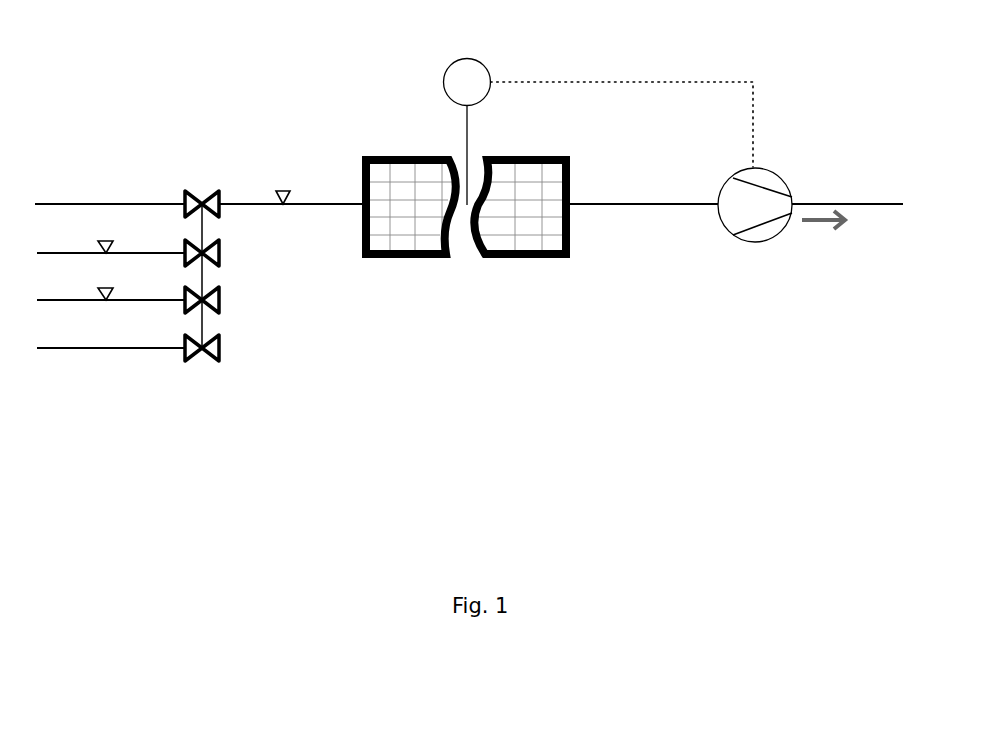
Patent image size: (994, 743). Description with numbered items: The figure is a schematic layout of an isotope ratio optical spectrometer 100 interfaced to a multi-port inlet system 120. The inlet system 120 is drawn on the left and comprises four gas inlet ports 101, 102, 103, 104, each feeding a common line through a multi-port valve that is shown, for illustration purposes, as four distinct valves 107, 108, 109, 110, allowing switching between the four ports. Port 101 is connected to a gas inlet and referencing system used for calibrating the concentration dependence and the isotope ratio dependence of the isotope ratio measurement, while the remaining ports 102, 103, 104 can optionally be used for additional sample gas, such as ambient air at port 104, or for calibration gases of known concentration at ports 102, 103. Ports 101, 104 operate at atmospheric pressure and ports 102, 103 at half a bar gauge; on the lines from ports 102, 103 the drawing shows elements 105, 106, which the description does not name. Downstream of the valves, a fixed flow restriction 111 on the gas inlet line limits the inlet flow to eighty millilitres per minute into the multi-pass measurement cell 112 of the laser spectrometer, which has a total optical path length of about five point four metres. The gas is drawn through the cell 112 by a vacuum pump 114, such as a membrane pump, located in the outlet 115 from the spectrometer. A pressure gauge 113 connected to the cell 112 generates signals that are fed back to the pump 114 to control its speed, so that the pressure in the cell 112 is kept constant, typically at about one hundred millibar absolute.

The isotope ratio optical spectrometer 100 is at (352, 117).
The inlet port 101 is at (109, 192).
The inlet port 102 is at (110, 242).
The inlet port 103 is at (110, 289).
The inlet port 104 is at (110, 336).
The pressure reducer 105 is at (124, 242).
The pressure reducer 106 is at (124, 289).
The valve 107 is at (222, 197).
The valve 108 is at (222, 249).
The valve 109 is at (222, 295).
The valve 110 is at (222, 343).
The fixed flow restriction 111 is at (301, 192).
The multi-pass measurement cell 112 is at (485, 227).
The pressure gauge 113 is at (599, 126).
The vacuum pump 114 is at (764, 232).
The outlet 115 is at (853, 206).
The multi-port inlet system 120 is at (277, 379).